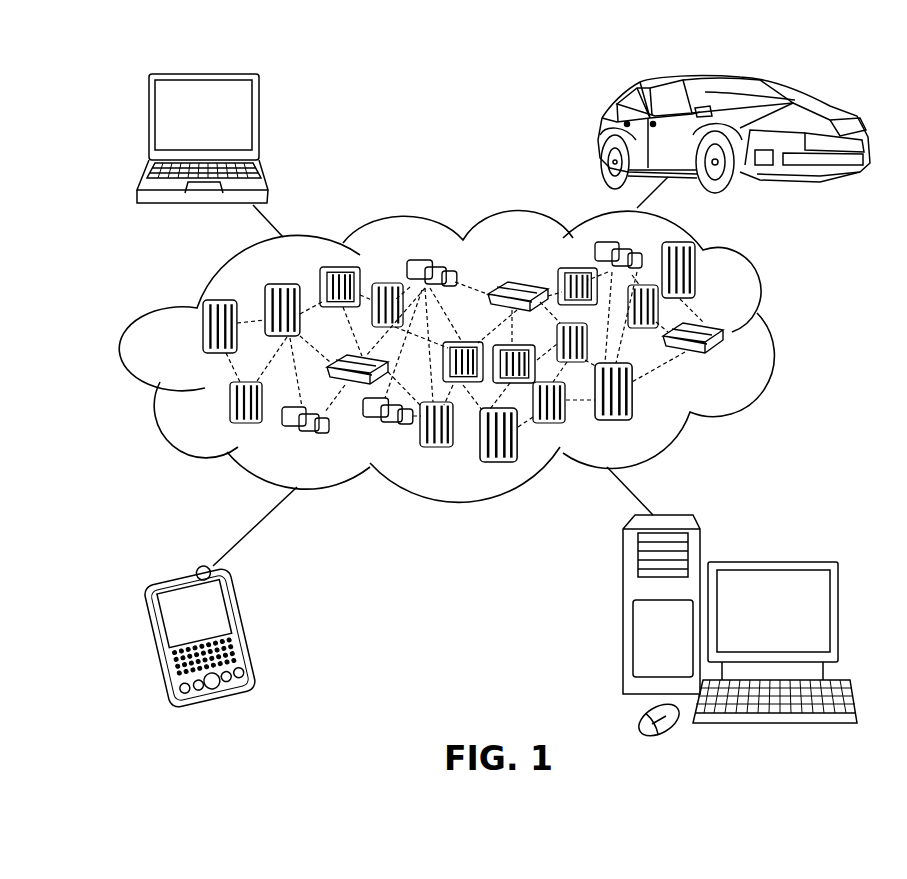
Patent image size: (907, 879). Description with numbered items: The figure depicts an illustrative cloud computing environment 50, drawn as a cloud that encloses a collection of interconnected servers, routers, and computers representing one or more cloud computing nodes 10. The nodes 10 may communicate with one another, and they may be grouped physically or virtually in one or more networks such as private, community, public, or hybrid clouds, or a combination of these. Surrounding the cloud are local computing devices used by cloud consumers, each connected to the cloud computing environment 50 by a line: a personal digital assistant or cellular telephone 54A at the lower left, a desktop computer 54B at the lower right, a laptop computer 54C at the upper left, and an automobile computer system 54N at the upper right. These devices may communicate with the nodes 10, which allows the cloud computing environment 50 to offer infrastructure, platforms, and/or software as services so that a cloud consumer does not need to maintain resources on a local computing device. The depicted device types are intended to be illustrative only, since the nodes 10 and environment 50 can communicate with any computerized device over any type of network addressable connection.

The cloud computing nodes 10 is at (725, 357).
The cloud computing environment 50 is at (772, 336).
The personal digital assistant (PDA) or cellular telephone 54A is at (252, 636).
The desktop computer 54B is at (772, 560).
The laptop computer 54C is at (262, 116).
The automobile computer system 54N is at (600, 132).